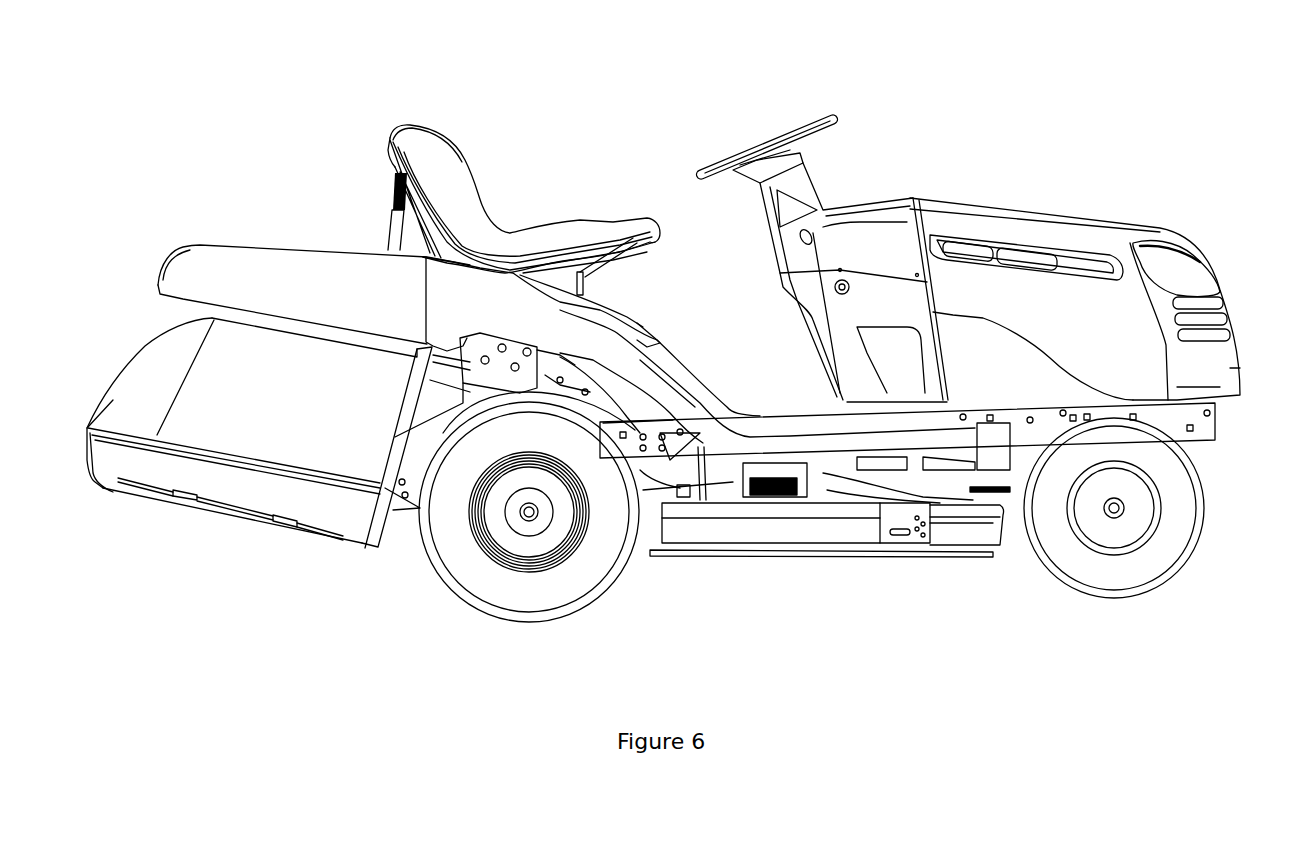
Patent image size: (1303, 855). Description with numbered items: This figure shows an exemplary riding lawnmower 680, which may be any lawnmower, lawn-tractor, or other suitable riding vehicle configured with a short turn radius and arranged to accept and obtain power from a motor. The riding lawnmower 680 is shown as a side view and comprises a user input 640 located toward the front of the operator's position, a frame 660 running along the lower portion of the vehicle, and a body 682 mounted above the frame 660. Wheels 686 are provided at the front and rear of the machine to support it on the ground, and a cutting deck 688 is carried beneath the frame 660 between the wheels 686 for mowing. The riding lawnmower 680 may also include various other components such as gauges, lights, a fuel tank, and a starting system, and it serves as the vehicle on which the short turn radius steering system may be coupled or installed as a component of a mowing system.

The user input 640 is at (770, 130).
The frame 660 is at (1203, 443).
The riding lawnmower 680 is at (1150, 205).
The body 682 is at (940, 197).
The wheels 686 is at (500, 622).
The cutting deck 688 is at (980, 550).